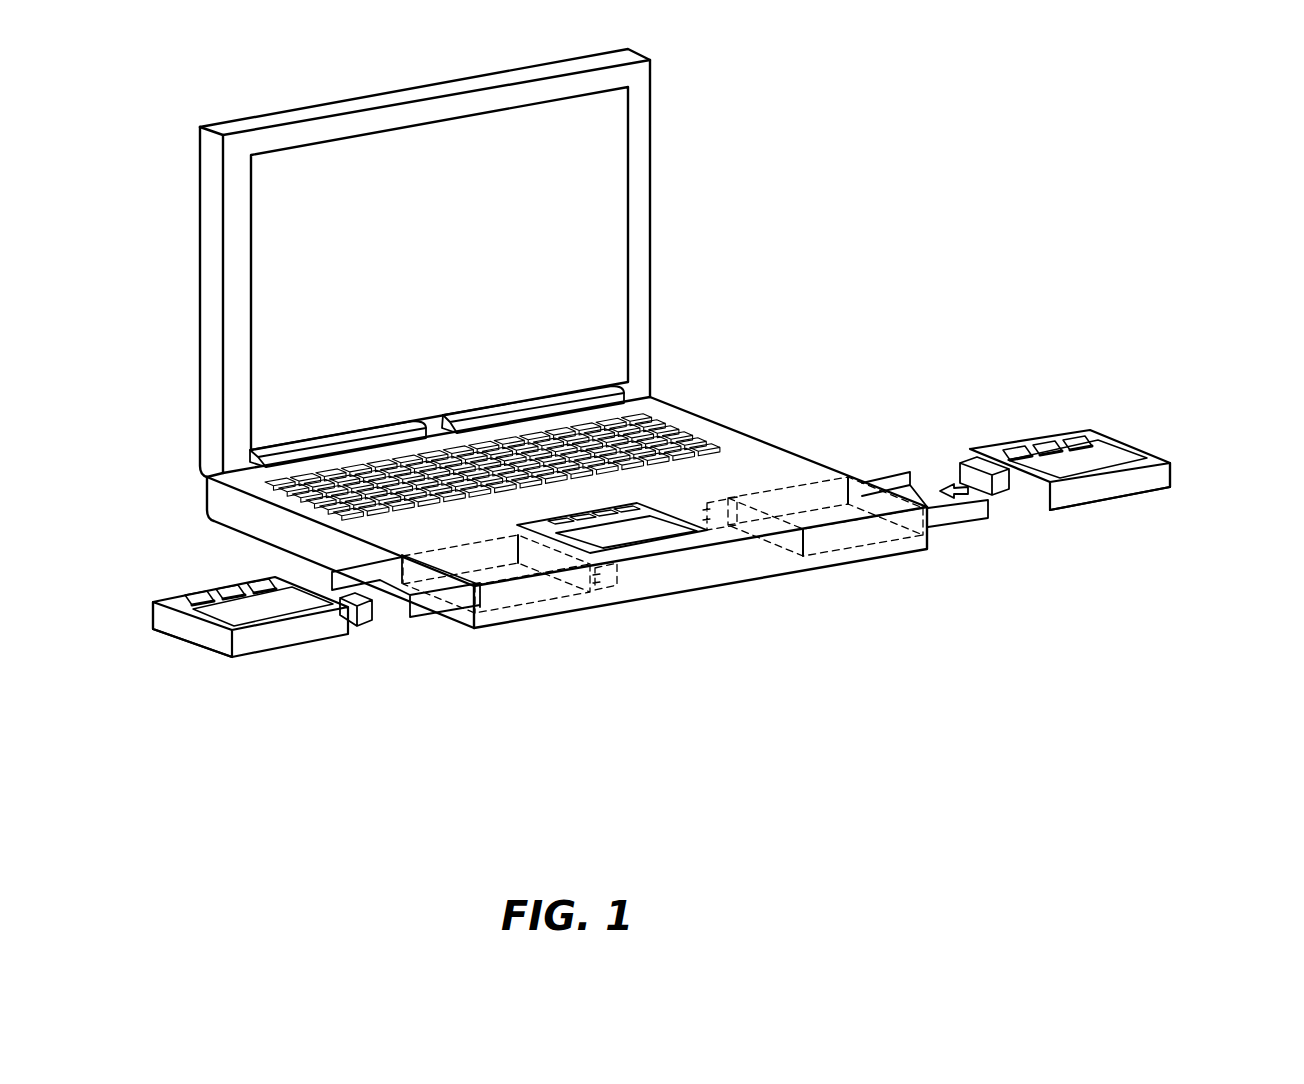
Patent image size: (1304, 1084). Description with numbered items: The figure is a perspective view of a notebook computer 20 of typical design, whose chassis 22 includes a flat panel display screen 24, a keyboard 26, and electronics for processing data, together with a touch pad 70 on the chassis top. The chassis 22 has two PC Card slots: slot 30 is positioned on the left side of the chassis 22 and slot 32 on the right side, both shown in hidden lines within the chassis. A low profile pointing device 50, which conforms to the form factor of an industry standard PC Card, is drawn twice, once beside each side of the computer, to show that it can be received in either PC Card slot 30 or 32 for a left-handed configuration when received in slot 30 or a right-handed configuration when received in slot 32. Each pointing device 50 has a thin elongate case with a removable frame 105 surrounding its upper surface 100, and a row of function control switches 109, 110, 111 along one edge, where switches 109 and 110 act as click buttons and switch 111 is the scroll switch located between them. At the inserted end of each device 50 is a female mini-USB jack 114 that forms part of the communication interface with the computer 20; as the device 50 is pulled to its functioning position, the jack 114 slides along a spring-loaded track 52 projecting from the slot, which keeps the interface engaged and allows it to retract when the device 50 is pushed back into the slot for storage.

The notebook computer 20 is at (531, 362).
The chassis 22 is at (790, 449).
The flat panel display screen 24 is at (252, 272).
The keyboard 26 is at (676, 428).
The PC Card slot 30 is at (545, 592).
The PC Card slot 32 is at (845, 540).
The pointing device 50 is at (669, 538).
The spring-loaded track 52 is at (438, 607).
The touchpad 70 is at (652, 532).
The module top surface 100 is at (235, 620).
The removable frame 105 is at (167, 614).
The function control switch 109 is at (263, 586).
The function control switch 110 is at (197, 598).
The scroll switch 111 is at (226, 592).
The female mini-USB jack 114 is at (350, 577).